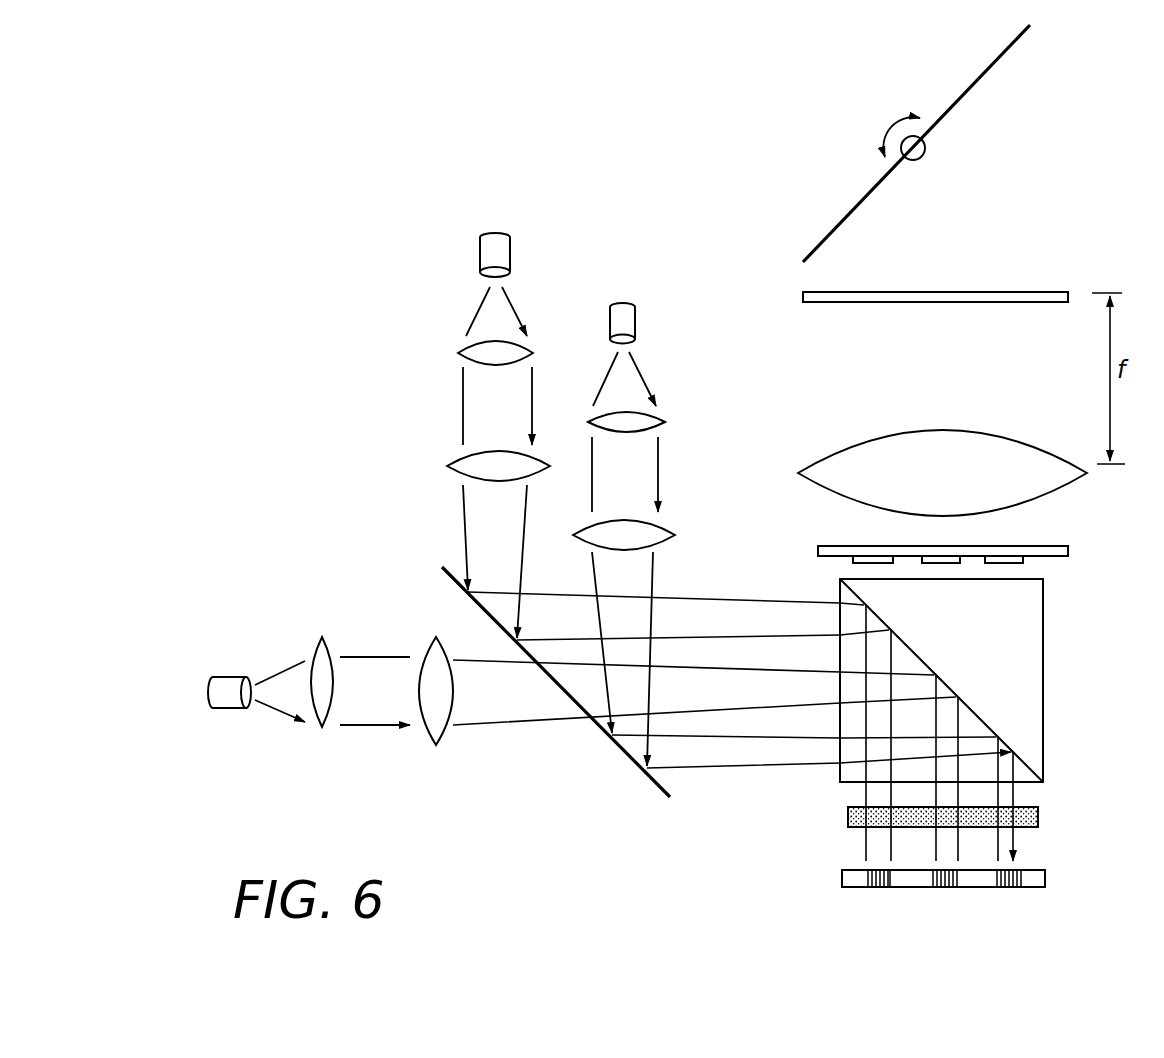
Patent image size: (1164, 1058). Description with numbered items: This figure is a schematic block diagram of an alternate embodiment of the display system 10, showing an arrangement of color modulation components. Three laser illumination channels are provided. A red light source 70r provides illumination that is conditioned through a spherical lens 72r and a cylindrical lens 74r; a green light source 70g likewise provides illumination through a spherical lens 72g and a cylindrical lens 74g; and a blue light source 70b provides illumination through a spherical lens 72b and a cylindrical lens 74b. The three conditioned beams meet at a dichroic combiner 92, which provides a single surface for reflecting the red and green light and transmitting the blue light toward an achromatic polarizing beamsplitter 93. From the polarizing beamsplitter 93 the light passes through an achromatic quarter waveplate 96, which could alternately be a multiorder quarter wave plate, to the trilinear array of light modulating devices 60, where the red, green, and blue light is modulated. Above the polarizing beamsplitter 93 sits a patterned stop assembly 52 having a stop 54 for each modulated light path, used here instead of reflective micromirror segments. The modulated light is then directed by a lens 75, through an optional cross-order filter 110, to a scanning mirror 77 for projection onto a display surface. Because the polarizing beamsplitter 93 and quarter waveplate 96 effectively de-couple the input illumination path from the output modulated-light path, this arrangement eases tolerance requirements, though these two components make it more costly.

The display system 10 is at (436, 196).
The red light source 70r is at (480, 252).
The spherical lens 72r is at (458, 353).
The cylindrical lens 74r is at (447, 466).
The green light source 70g is at (635, 312).
The spherical lens 72g is at (665, 422).
The cylindrical lens 74g is at (675, 535).
The blue light source 70b is at (218, 677).
The spherical lens 72b is at (314, 648).
The cylindrical lens 74b is at (428, 647).
The dichroic combiner 92 is at (620, 753).
The achromatic polarizing beamsplitter 93 is at (1043, 645).
The patterned stop assembly 52 is at (1040, 545).
The stop 54 is at (855, 563).
The achromatic quarter waveplate 96 is at (1038, 815).
The trilinear array of light modulating devices 60 is at (915, 886).
The lens 75 is at (1017, 435).
The cross-order filter 110 is at (1017, 292).
The scanning mirror 77 is at (967, 90).